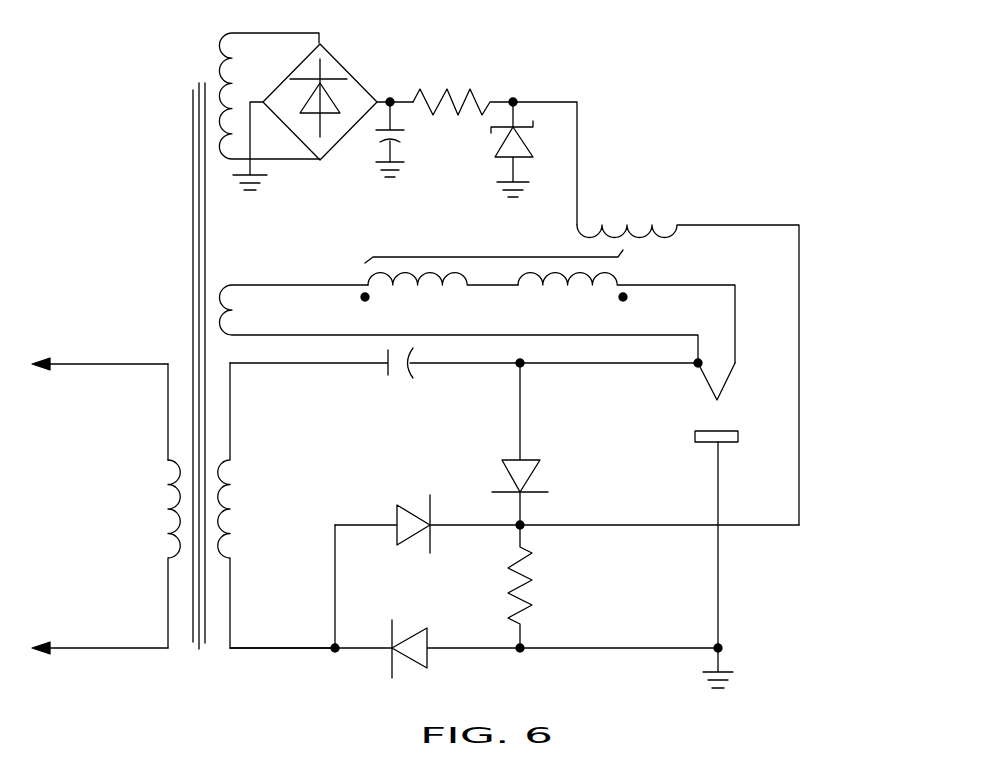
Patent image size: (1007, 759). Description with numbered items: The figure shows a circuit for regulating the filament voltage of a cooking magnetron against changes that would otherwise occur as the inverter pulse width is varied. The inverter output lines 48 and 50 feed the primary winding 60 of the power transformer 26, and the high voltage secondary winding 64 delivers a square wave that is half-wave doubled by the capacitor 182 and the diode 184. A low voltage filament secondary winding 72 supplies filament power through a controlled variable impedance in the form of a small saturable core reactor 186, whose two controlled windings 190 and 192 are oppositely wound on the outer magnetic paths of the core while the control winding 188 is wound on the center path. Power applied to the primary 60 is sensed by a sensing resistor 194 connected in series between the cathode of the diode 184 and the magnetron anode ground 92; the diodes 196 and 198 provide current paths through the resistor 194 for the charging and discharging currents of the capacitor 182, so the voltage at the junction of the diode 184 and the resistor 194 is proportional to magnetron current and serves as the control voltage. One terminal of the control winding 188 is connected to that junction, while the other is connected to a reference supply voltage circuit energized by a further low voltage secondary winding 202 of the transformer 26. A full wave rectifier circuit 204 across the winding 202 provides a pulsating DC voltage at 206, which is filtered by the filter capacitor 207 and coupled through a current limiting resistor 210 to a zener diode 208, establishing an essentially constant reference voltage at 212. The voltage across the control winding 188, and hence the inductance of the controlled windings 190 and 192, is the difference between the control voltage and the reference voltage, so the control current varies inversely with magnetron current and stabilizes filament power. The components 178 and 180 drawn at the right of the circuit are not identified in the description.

The power transformer 26 is at (200, 655).
The inverter output line 48 is at (92, 364).
The inverter output line 50 is at (97, 650).
The primary winding 60 is at (167, 462).
The high voltage secondary winding 64 is at (233, 485).
The low voltage filament secondary winding 72 is at (218, 293).
The magnetron anode ground 92 is at (722, 665).
The electrode plate 178 is at (703, 443).
The switching element 180 is at (707, 376).
The capacitor 182 is at (388, 373).
The diode 184 is at (507, 480).
The saturable core reactor 186 is at (566, 243).
The control winding 188 is at (607, 233).
The controlled winding 190 is at (617, 280).
The controlled winding 192 is at (367, 278).
The sensing resistor 194 is at (513, 585).
The diode 196 is at (425, 628).
The diode 198 is at (423, 520).
The low voltage secondary winding 202 is at (230, 67).
The full wave rectifier circuit 204 is at (327, 90).
The pulsating DC voltage point 206 is at (390, 102).
The filter capacitor 207 is at (398, 141).
The zener diode 208 is at (520, 135).
The current limiting resistor 210 is at (453, 100).
The reference voltage point 212 is at (515, 98).